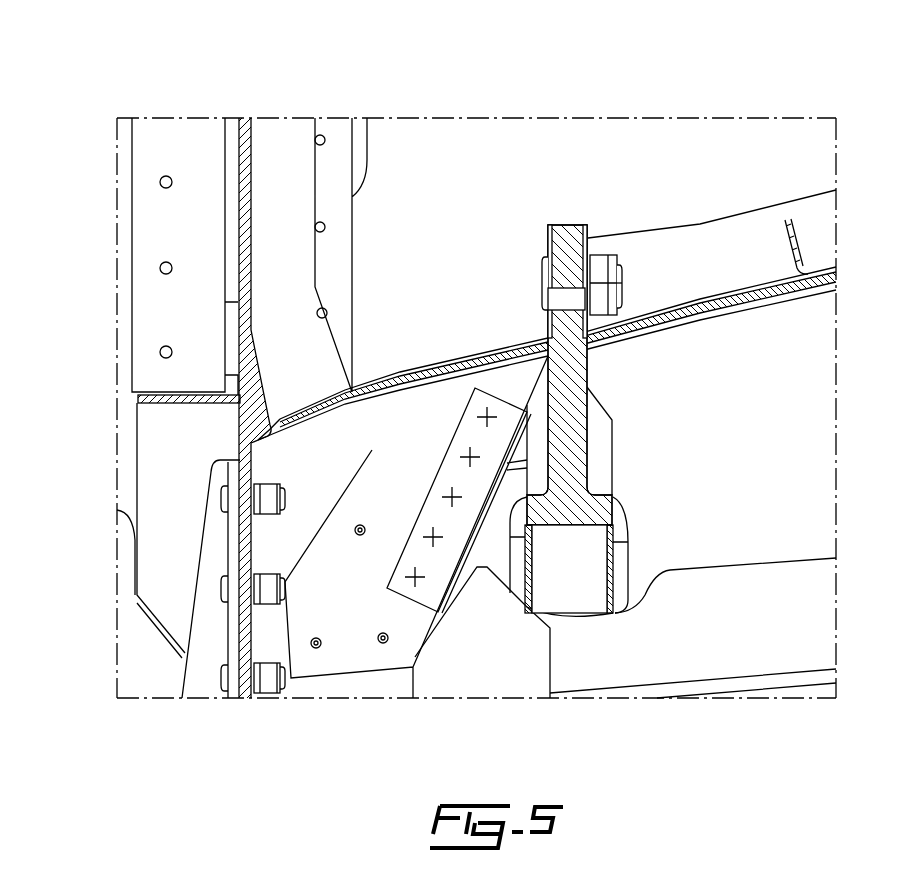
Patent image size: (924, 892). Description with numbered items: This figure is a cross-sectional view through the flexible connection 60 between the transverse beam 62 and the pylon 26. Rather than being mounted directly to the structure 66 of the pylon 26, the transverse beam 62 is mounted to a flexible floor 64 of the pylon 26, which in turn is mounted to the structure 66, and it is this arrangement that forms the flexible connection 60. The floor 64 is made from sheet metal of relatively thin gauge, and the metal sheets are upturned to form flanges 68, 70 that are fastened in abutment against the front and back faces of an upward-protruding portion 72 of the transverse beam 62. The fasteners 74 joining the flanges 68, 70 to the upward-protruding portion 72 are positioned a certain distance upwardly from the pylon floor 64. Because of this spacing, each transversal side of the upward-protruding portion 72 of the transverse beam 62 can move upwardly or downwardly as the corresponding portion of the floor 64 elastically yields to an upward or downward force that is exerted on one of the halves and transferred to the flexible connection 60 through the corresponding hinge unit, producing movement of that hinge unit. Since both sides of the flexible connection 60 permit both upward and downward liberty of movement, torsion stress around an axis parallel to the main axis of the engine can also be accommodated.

The pylon 26 is at (188, 137).
The flexible connection 60 is at (693, 247).
The transverse beam 62 is at (567, 437).
The flexible floor 64 is at (478, 357).
The structure 66 is at (245, 150).
The flange 68 is at (548, 238).
The flange 70 is at (588, 237).
The upward-protruding portion 72 is at (563, 270).
The fasteners 74 is at (600, 270).